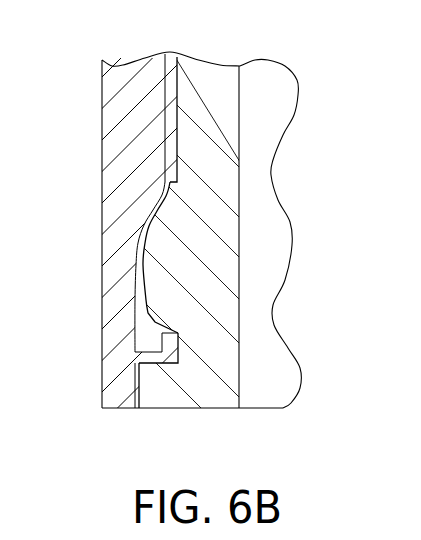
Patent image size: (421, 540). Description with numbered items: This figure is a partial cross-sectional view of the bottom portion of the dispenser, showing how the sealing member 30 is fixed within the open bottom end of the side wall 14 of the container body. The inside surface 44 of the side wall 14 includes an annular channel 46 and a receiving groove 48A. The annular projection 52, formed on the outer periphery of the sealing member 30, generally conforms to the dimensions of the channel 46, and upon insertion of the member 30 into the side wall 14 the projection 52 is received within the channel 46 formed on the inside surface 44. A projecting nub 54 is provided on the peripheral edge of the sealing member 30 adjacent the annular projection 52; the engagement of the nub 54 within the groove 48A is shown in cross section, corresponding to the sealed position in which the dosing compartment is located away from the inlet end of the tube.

The sealing member 30 is at (348, 99).
The side wall 14 is at (122, 159).
The inside surface 44 is at (162, 108).
The annular projection 52 is at (167, 252).
The annular channel 46 is at (145, 286).
The receiving groove 48A is at (136, 368).
The projecting nub 54 is at (161, 387).